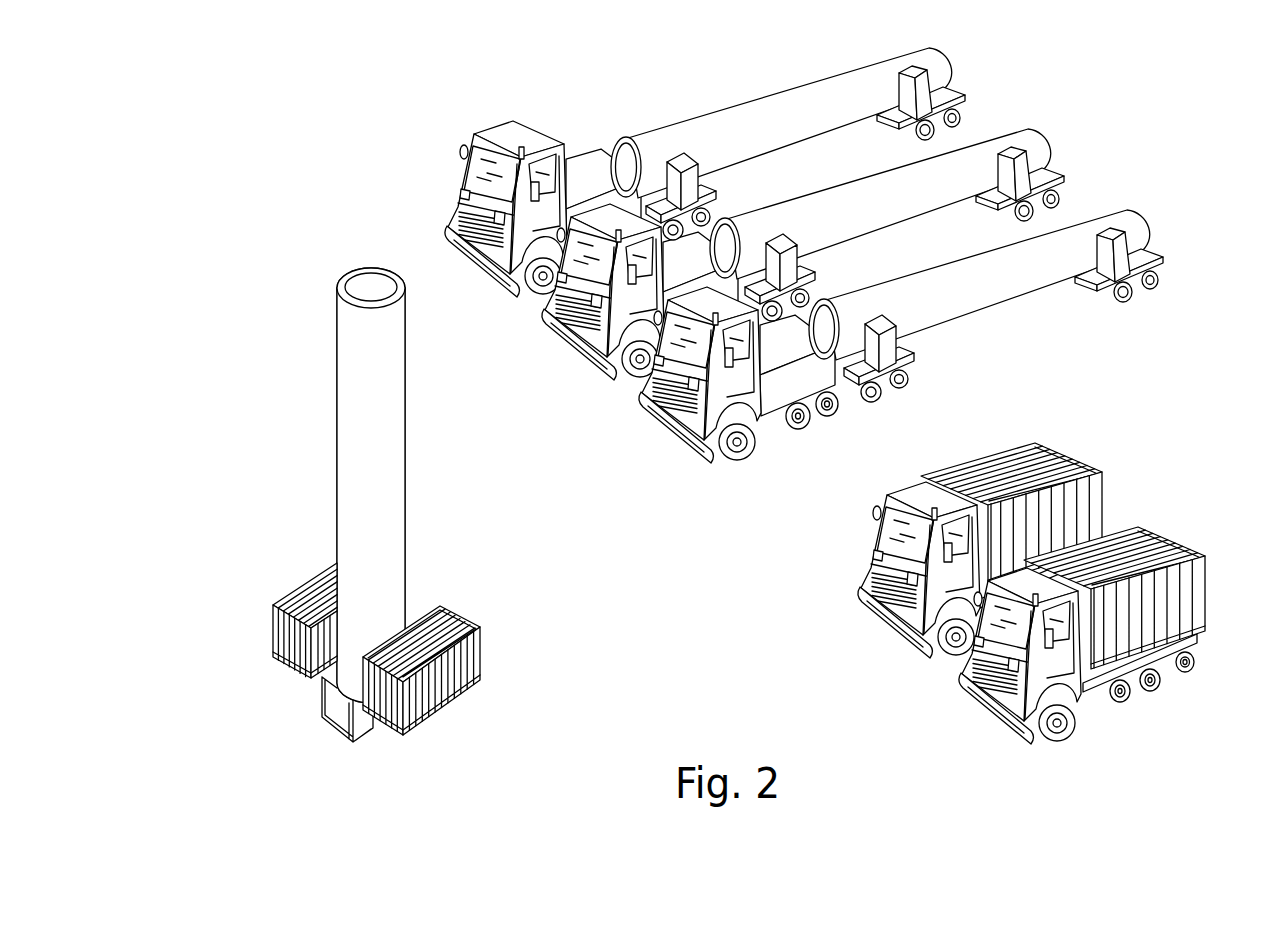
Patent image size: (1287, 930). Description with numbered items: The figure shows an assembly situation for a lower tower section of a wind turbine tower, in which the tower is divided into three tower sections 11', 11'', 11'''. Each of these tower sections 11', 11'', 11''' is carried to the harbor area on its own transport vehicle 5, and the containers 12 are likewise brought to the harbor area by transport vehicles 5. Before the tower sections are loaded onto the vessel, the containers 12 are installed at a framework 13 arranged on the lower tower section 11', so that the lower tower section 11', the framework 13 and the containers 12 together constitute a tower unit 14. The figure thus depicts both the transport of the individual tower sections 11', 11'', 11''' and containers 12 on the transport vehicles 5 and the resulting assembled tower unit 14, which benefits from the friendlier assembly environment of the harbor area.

The transport vehicle 5 is at (706, 470).
The lower tower section 11' is at (651, 375).
The tower section 11'' is at (887, 225).
The tower section 11''' is at (986, 306).
The container 12 is at (325, 580).
The framework 13 is at (315, 699).
The tower unit 14 is at (316, 510).